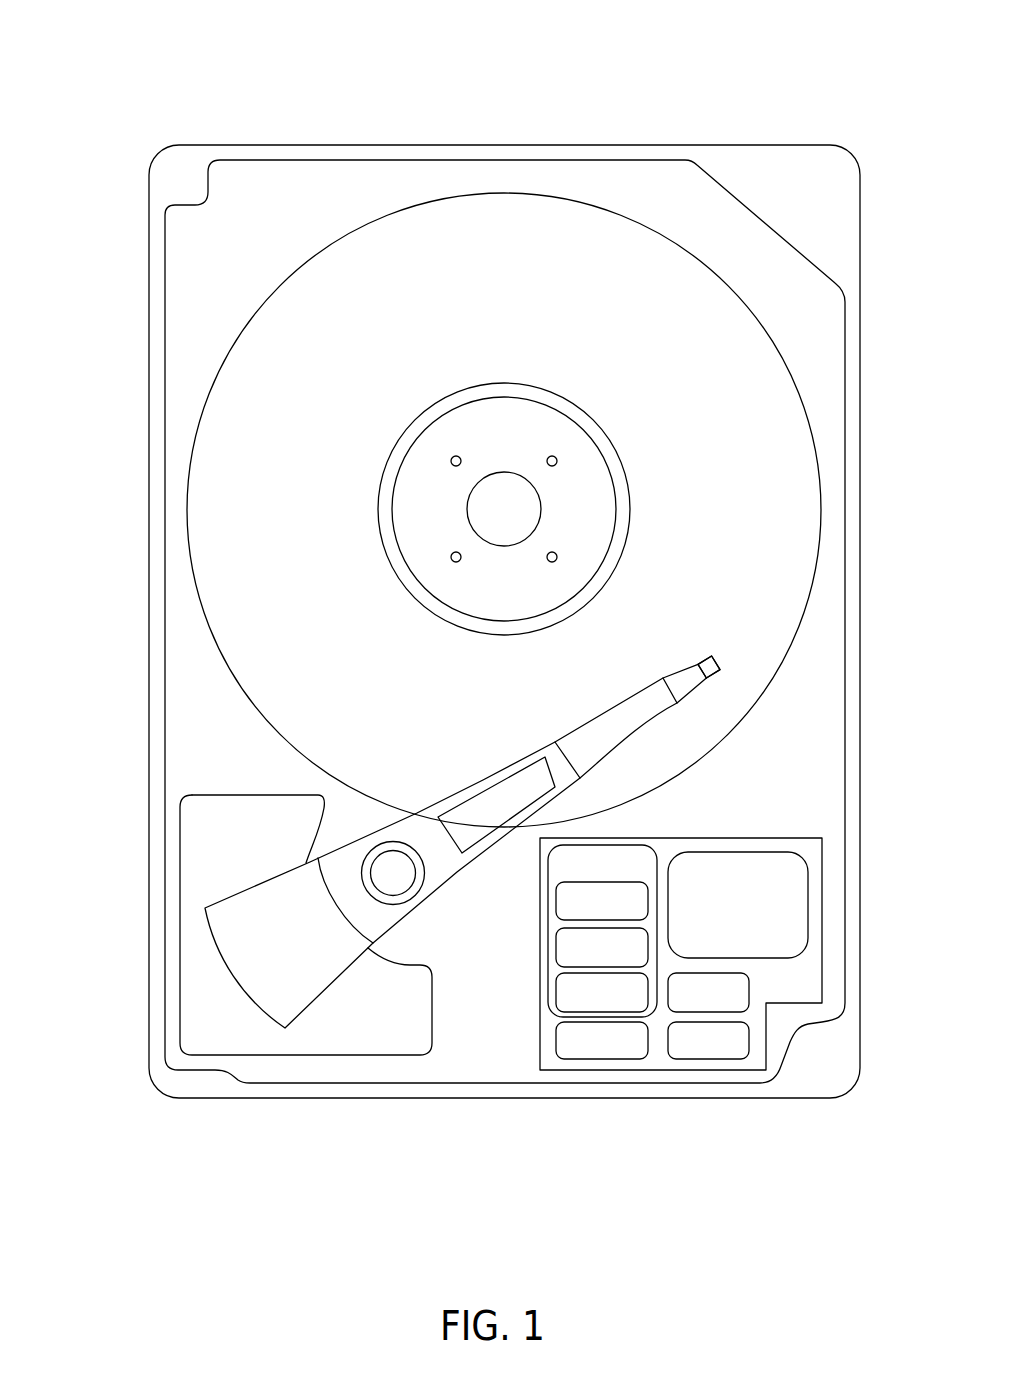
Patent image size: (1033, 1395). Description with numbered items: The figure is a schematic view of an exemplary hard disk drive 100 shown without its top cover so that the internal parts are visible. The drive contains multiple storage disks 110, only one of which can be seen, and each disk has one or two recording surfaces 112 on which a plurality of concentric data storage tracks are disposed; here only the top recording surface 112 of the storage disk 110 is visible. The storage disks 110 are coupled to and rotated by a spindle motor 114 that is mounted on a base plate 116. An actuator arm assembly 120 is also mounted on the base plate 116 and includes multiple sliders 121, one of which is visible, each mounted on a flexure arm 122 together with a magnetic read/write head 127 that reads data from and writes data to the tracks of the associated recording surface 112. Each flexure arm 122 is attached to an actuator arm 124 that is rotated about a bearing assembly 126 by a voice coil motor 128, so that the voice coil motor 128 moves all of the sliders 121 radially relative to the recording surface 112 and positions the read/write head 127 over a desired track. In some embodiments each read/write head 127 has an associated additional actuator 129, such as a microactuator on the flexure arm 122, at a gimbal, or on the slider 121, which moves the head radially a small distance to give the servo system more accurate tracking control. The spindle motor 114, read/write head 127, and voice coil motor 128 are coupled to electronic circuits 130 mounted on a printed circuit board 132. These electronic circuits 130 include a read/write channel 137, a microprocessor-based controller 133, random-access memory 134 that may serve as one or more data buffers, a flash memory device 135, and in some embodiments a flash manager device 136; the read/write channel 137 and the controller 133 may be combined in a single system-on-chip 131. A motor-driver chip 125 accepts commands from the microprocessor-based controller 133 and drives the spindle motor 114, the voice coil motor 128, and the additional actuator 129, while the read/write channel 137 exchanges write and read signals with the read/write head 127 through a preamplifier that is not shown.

The hard disk drive 100 is at (128, 66).
The storage disk 110 is at (504, 505).
The recording surface 112 is at (310, 491).
The spindle motor 114 is at (600, 447).
The base plate 116 is at (848, 647).
The actuator arm assembly 120 is at (504, 736).
The slider 121 is at (738, 561).
The flexure arm 122 is at (677, 672).
The actuator arm 124 is at (577, 725).
The motor-driver chip 125 is at (728, 1006).
The bearing assembly 126 is at (420, 918).
The read/write head 127 is at (738, 561).
The voice coil motor 128 is at (433, 993).
The additional actuator 129 is at (722, 660).
The electronic circuits 130 is at (686, 913).
The system-on-chip 131 is at (622, 874).
The printed circuit board 132 is at (762, 836).
The microprocessor-based controller 133 is at (622, 917).
The random-access memory 134 is at (728, 1056).
The flash memory device 135 is at (758, 919).
The flash manager device 136 is at (622, 1056).
The read/write channel 137 is at (622, 961).